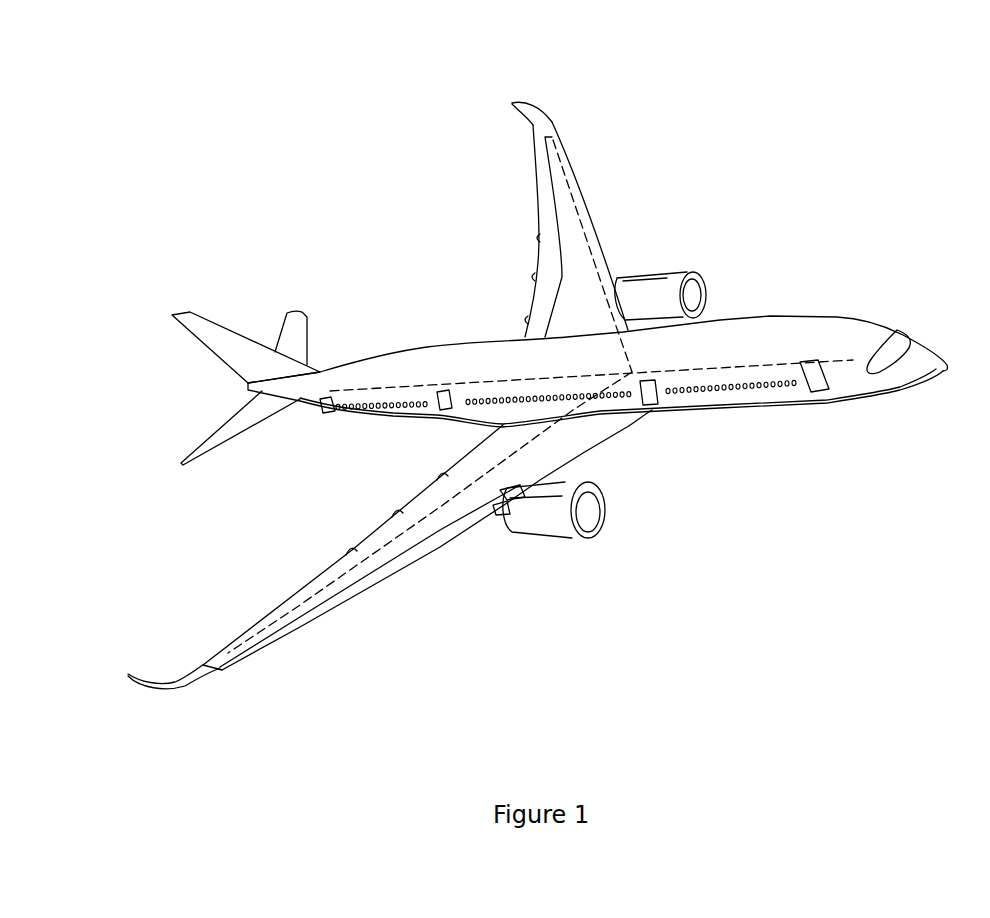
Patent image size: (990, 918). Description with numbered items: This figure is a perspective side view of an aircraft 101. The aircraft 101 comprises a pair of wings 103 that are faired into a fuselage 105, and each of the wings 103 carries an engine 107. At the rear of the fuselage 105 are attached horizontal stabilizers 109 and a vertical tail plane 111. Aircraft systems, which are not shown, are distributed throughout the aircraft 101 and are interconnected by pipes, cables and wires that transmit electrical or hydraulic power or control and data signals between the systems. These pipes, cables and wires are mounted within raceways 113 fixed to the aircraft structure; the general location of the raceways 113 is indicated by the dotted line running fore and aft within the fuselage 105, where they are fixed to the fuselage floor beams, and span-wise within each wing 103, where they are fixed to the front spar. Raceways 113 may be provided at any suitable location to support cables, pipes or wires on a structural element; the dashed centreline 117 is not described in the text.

The aircraft 101 is at (538, 366).
The wings 103 is at (578, 277).
The fuselage 105 is at (765, 388).
The engine 107 is at (690, 300).
The horizontal stabilizers 109 is at (295, 332).
The vertical tail plane 111 is at (217, 332).
The raceways 113 is at (580, 218).
The fuselage centerline 117 is at (770, 365).